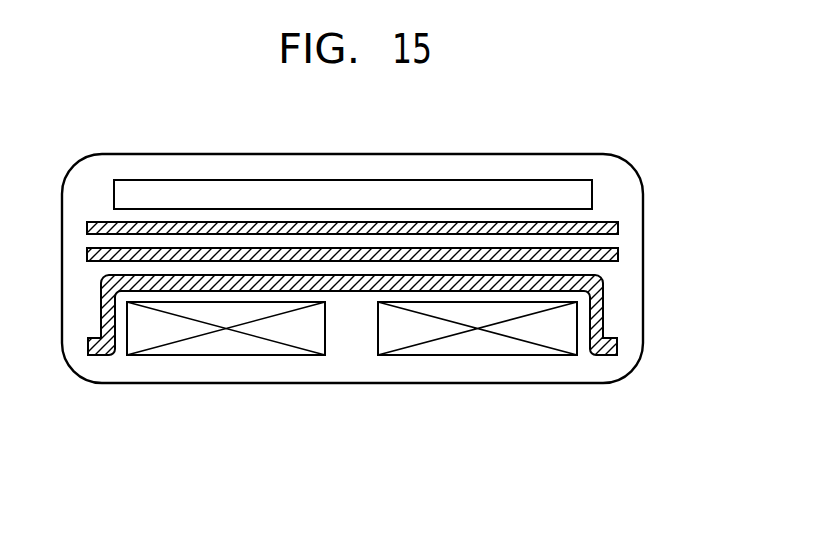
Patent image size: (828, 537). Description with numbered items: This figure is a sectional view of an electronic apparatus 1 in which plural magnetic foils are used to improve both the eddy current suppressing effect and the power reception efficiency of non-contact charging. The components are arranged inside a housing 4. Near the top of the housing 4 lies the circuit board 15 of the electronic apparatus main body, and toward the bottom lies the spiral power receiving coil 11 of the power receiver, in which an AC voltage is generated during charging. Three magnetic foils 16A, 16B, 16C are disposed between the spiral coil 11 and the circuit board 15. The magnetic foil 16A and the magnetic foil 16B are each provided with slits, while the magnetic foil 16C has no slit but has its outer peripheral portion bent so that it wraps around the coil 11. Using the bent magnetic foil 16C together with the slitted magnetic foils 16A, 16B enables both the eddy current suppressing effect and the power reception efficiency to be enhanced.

The electronic apparatus 1 is at (617, 128).
The housing 4 is at (533, 383).
The power receiving coil 11 is at (403, 355).
The circuit board 15 is at (513, 182).
The magnetic foil 16A is at (618, 224).
The magnetic foil 16B is at (618, 250).
The magnetic foil 16C is at (603, 313).